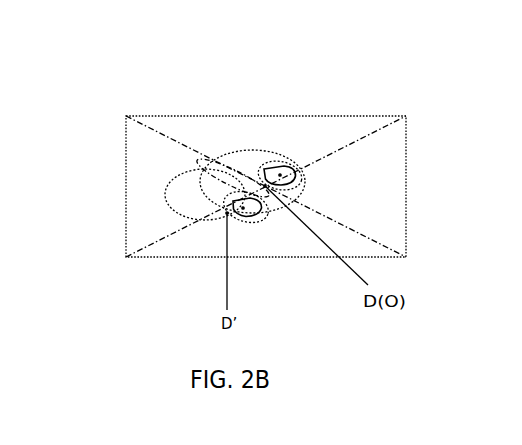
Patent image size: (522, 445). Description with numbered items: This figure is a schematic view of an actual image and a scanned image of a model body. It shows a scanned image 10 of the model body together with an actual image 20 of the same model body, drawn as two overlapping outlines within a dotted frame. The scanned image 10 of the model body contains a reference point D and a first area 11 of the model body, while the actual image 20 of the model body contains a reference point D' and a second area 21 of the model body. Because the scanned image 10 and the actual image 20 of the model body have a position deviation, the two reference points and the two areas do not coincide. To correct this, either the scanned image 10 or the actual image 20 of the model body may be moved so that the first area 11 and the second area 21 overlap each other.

The scanned image of the model body 10 is at (251, 148).
The first area of the model body 11 is at (287, 163).
The actual image of the model body 20 is at (174, 211).
The second area of the model body 21 is at (229, 201).